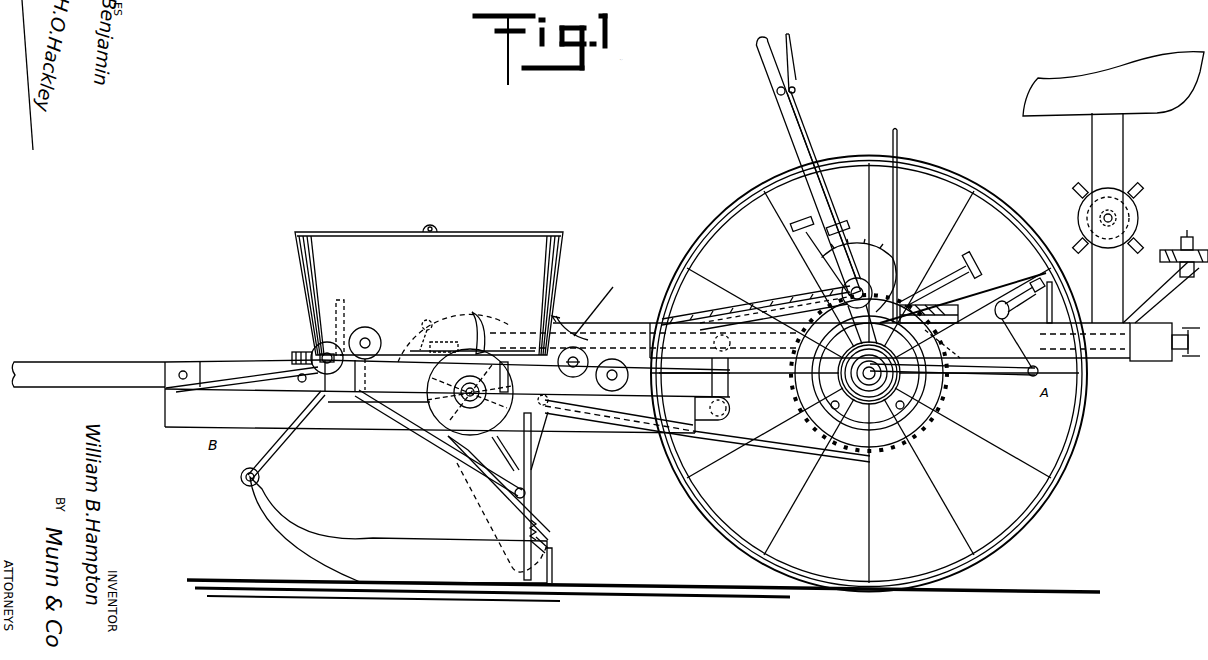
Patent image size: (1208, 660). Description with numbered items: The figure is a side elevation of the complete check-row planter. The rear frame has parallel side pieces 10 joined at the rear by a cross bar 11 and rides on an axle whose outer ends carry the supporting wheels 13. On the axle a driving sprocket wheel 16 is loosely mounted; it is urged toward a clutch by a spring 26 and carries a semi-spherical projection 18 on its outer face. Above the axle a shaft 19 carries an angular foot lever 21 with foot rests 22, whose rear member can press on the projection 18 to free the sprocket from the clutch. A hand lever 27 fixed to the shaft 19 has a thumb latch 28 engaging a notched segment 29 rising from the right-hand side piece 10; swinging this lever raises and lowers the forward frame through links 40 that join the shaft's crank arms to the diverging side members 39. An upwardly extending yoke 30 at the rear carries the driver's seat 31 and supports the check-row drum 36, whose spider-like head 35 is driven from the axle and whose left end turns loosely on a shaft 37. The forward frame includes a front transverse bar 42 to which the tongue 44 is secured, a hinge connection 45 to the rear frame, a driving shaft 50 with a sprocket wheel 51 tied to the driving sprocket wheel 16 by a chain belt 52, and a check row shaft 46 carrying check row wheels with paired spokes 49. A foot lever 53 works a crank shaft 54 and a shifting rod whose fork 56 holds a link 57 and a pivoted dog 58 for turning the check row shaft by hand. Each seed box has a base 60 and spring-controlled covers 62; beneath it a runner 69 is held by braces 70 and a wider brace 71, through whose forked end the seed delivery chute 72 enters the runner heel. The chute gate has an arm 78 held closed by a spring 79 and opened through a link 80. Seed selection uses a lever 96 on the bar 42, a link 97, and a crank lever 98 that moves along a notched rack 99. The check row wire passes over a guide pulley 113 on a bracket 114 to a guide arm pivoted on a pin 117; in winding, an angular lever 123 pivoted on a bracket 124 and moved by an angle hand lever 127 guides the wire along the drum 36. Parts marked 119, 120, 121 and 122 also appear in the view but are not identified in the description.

The side pieces 10 is at (1012, 360).
The cross bar 11 is at (1164, 342).
The supporting wheels 13 is at (1010, 518).
The driving sprocket wheel 16 is at (920, 420).
The semi-spherical projection 18 is at (856, 428).
The shaft 19 is at (840, 290).
The angular foot lever 21 is at (905, 300).
The foot rests 22 is at (800, 222).
The spring 26 is at (784, 303).
The hand lever 27 is at (796, 151).
The thumb latch 28 is at (812, 138).
The notched segment 29 is at (877, 243).
The yoke 30 is at (1117, 163).
The driver's seat 31 is at (1126, 112).
The spider-like head 35 is at (1078, 183).
The drum 36 is at (1138, 216).
The shaft 37 is at (1104, 220).
The side members 39 is at (619, 417).
The links 40 is at (732, 382).
The transverse bar 42 is at (329, 364).
The tongue or pole 44 is at (88, 374).
The hinge connection 45 is at (482, 330).
The check row shaft 46 is at (512, 377).
The spokes 49 is at (458, 470).
The driving shaft 50 is at (274, 379).
The sprocket wheel 51 is at (375, 402).
The chain belt 52 is at (700, 318).
The foot lever 53 is at (1012, 300).
The crank shaft 54 is at (1030, 376).
The fork 56 is at (452, 322).
The link 57 is at (414, 345).
The dog 58 is at (439, 342).
The base 60 is at (290, 357).
The cover 62 is at (372, 232).
The runner or furrow opener 69 is at (398, 530).
The braces 70 is at (286, 452).
The wider brace 71 is at (532, 457).
The seed delivery chute 72 is at (488, 518).
The arm 78 is at (553, 549).
The spring 79 is at (547, 540).
The link 80 is at (540, 522).
The lever 96 is at (505, 453).
The link 97 is at (548, 428).
The crank lever 98 is at (612, 297).
The rack 99 is at (565, 326).
The guide pulley 113 is at (975, 276).
The bracket 114 is at (950, 300).
The pin 117 is at (340, 300).
The roller pin 119 is at (315, 350).
The roller 120 is at (370, 328).
The roller 121 is at (573, 378).
The roller 122 is at (663, 363).
The angular lever 123 is at (1143, 282).
The bracket 124 is at (1192, 237).
The angle hand lever 127 is at (898, 223).